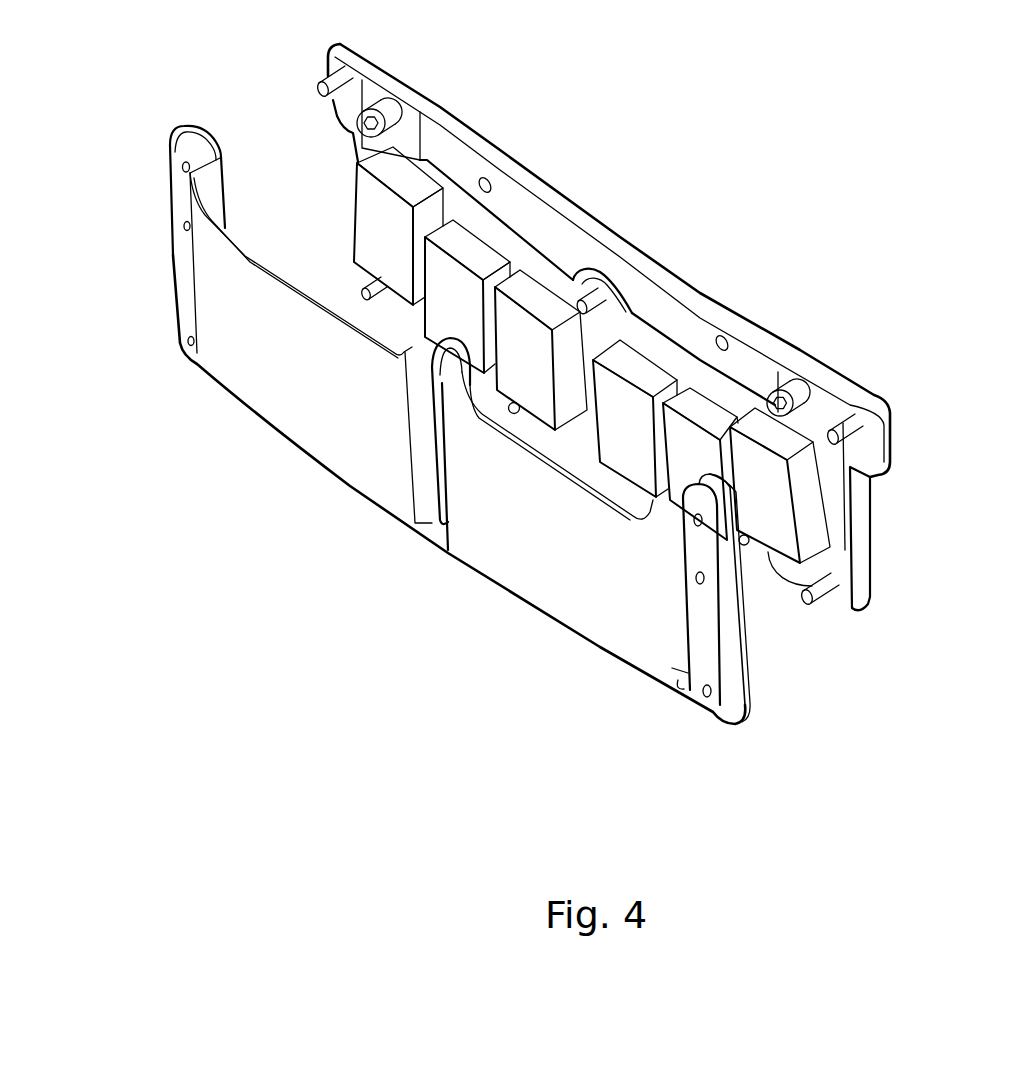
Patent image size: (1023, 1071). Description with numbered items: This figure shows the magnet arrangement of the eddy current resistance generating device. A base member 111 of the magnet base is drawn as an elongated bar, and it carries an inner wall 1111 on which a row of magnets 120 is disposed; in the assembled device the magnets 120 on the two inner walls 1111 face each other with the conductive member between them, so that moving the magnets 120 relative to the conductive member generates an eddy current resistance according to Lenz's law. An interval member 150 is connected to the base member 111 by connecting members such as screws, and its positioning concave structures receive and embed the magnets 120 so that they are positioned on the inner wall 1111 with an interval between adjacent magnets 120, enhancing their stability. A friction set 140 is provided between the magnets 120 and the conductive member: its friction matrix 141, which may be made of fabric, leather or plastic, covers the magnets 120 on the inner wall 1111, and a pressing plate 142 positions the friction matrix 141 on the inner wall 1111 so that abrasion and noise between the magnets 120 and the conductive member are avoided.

The base member 111 is at (880, 408).
The inner wall 1111 is at (843, 545).
The magnet 120 is at (622, 408).
The friction set 140 is at (788, 662).
The friction matrix 141 is at (745, 652).
The pressing plate 142 is at (738, 745).
The interval member 150 is at (830, 407).